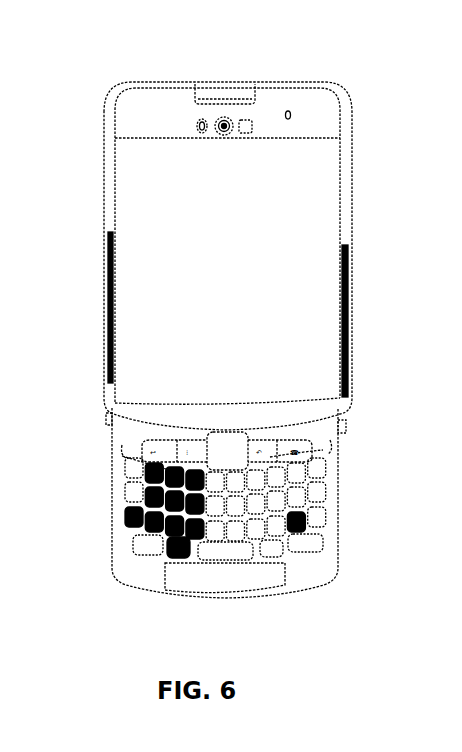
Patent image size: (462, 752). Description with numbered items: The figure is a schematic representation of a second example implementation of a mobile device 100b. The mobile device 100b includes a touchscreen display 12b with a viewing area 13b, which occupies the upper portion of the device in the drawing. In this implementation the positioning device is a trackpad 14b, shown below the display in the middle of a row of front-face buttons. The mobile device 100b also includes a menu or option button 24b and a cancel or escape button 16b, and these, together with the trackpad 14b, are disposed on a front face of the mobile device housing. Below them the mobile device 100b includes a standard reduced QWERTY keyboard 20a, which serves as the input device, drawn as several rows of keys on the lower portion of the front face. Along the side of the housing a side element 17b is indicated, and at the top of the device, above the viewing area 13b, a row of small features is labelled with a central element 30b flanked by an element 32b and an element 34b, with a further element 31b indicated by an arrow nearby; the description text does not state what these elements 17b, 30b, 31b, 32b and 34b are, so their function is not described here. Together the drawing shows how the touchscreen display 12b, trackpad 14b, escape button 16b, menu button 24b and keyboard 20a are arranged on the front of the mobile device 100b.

The mobile device 100b is at (84, 130).
The touchscreen display 12b is at (342, 216).
The viewing area 13b is at (236, 187).
The trackpad 14b is at (222, 432).
The escape button 16b is at (292, 464).
The side button 17b is at (346, 423).
The standard reduced QWERTY keyboard 20a is at (167, 518).
The menu or option button 24b is at (122, 478).
The camera 30b is at (224, 100).
The sensor 31b is at (274, 125).
The speaker 32b is at (196, 80).
The flash 34b is at (250, 80).